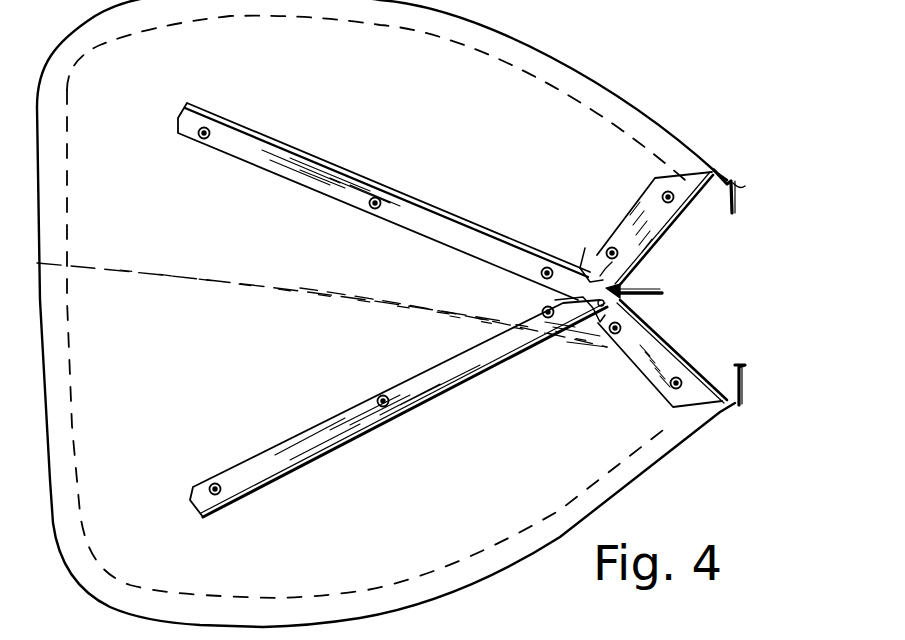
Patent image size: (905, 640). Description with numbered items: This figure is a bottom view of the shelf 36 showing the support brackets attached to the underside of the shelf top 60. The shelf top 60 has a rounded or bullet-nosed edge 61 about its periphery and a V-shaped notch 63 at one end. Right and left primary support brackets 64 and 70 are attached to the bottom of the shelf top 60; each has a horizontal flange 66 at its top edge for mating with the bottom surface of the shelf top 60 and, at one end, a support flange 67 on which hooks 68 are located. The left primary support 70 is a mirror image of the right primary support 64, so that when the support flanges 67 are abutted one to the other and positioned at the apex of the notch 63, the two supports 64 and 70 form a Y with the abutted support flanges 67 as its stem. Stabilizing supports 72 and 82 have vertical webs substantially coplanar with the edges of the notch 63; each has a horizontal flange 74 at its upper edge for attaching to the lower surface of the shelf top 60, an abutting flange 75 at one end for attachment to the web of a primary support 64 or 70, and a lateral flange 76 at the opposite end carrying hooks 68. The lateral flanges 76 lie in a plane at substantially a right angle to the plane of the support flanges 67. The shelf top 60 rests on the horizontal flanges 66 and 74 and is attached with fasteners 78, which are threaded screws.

The shelf 36 is at (784, 92).
The shelf top 60 is at (557, 53).
The bullet-nosed edge 61 is at (53, 480).
The V-shaped notch 63 is at (782, 291).
The right primary support bracket 64 is at (384, 274).
The horizontal flange 66 is at (309, 195).
The support flange 67 is at (652, 276).
The hooks 68 is at (737, 198).
The left primary support bracket 70 is at (339, 454).
The right stabilizing support 72 is at (668, 242).
The horizontal flange 74 is at (610, 232).
The abutting flange 75 is at (598, 262).
The lateral flange 76 is at (738, 184).
The fasteners 78 is at (203, 140).
The left stabilizing support 82 is at (680, 358).